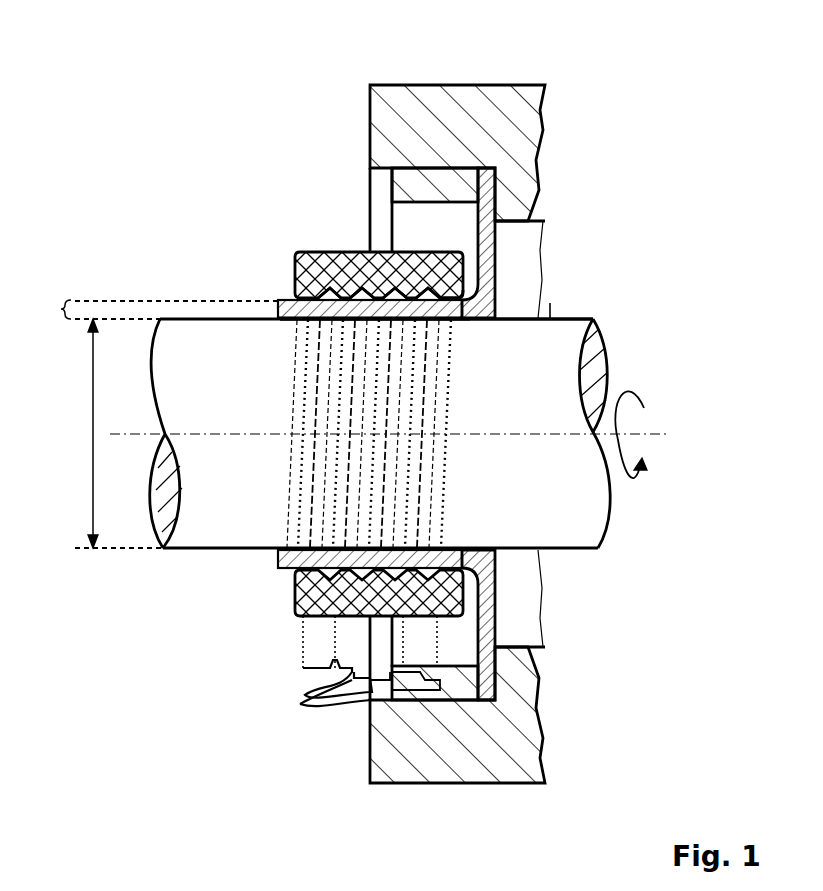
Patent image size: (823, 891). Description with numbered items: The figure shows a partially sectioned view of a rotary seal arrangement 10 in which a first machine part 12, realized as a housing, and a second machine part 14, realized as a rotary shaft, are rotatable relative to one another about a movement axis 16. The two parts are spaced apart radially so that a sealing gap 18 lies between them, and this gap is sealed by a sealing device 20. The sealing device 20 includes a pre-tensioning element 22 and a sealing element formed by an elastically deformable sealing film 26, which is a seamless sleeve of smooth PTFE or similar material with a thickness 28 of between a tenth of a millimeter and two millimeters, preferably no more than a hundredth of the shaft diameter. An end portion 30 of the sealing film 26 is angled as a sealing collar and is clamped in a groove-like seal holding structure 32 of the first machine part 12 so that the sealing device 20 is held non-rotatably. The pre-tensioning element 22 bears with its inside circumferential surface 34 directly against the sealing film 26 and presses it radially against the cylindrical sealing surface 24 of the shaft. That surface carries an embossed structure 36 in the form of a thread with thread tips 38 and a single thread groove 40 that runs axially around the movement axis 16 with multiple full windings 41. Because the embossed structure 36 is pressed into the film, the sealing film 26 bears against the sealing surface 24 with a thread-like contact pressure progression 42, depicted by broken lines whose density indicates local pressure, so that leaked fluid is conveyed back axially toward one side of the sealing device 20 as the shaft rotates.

The seal arrangement 10 is at (693, 94).
The first machine part 12 is at (500, 134).
The second machine part 14 is at (511, 478).
The movement axis 16 is at (637, 435).
The sealing gap 18 is at (529, 277).
The sealing device 20 is at (369, 448).
The pre-tensioning element 22 is at (318, 265).
The sealing surface 24 is at (550, 318).
The sealing film 26 is at (278, 305).
The thickness 28 is at (148, 308).
The end portion 30 is at (497, 224).
The seal holding structure 32 is at (438, 184).
The inside circumferential surface 34 is at (450, 303).
The embossed structure 36 is at (300, 320).
The thread tips 38 is at (408, 300).
The thread groove 40 is at (352, 290).
The full windings 41 is at (354, 669).
The contact pressure progression 42 is at (356, 454).